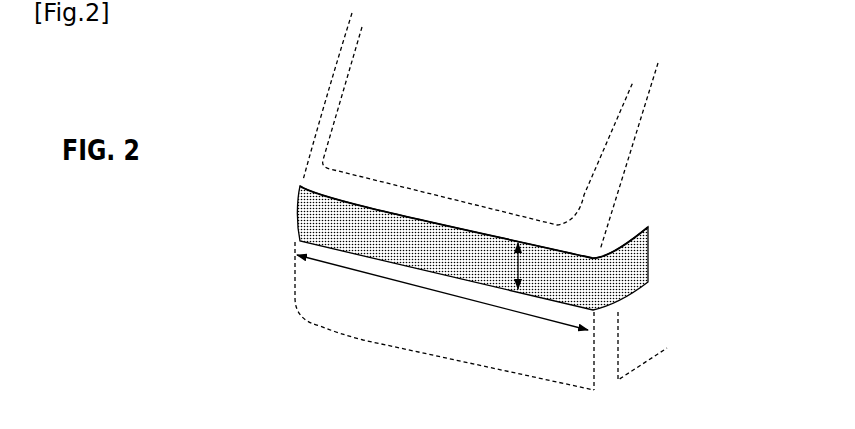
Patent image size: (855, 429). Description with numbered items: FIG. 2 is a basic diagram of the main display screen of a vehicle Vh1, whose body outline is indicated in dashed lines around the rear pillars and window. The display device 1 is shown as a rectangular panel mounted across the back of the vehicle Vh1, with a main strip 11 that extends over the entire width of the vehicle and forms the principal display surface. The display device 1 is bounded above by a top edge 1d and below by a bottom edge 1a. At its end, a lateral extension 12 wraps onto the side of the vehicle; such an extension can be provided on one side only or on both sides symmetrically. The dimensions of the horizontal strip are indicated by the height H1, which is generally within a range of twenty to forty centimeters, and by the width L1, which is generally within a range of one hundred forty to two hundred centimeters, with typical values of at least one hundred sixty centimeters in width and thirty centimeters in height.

The vehicle Vh1 is at (287, 88).
The display device 1 is at (518, 213).
The main strip 11 is at (518, 213).
The top edge 1d is at (518, 213).
The bottom edge 1a is at (518, 255).
The lateral extension 12 is at (637, 270).
The height H1 is at (535, 266).
The width L1 is at (442, 292).